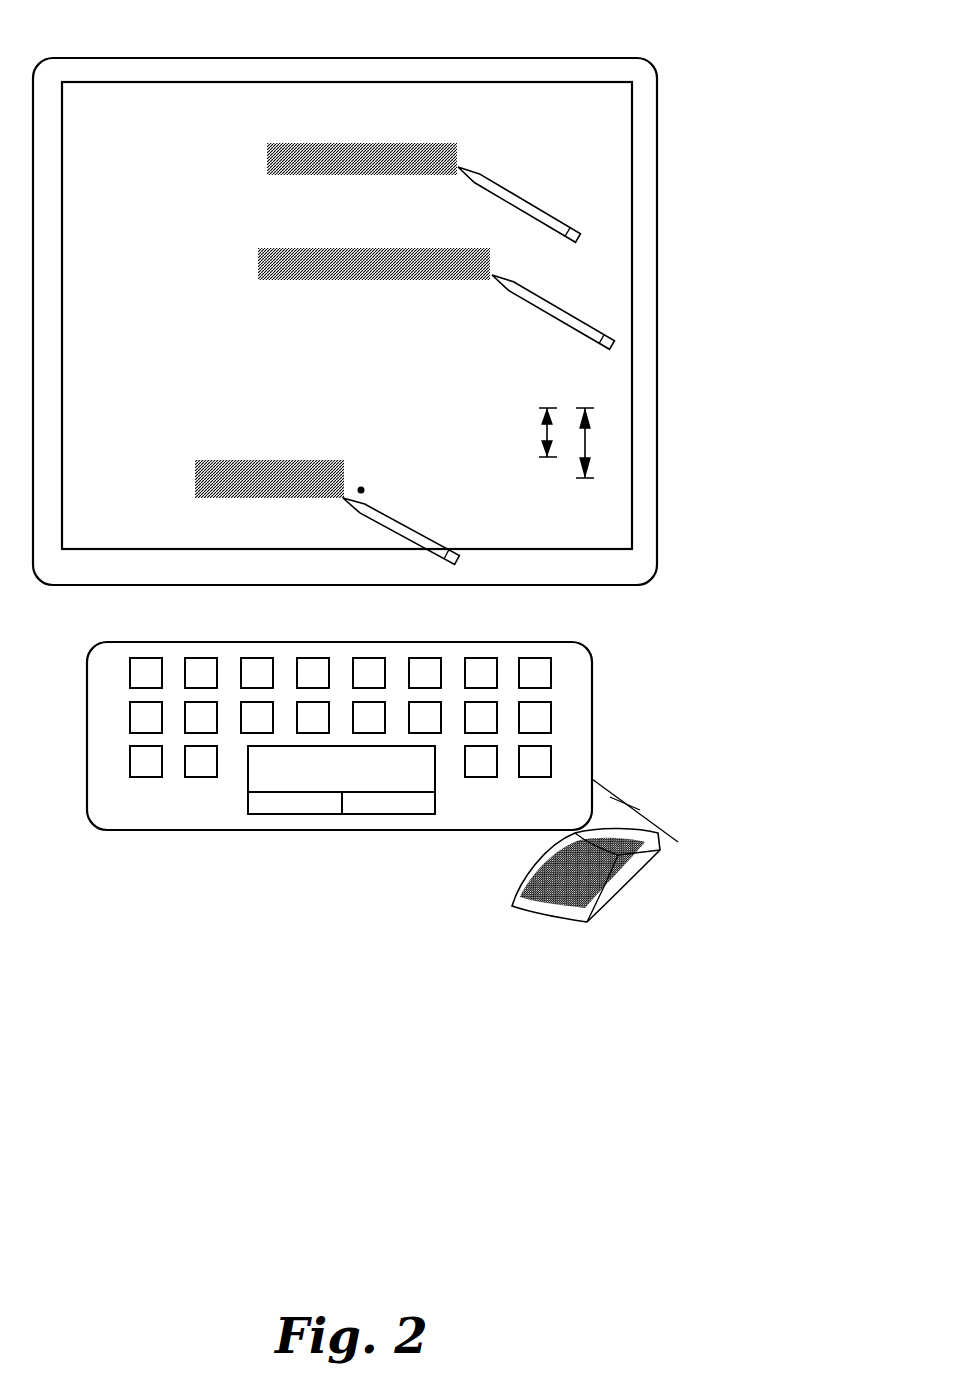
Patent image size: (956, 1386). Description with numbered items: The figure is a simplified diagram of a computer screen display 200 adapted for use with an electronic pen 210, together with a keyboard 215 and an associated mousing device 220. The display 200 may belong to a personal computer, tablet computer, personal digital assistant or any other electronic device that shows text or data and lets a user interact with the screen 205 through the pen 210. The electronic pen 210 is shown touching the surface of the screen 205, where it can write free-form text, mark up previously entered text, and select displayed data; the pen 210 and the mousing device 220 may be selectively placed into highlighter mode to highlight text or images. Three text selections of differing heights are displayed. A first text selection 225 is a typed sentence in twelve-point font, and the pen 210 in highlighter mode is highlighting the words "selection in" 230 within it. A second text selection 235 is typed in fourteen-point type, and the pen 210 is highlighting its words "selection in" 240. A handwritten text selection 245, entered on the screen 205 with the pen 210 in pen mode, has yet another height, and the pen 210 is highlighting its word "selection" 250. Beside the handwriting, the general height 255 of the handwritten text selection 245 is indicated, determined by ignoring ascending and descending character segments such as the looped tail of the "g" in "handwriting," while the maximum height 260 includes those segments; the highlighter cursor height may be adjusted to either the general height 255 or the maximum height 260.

The computer screen display 200 is at (505, 52).
The screen 205 is at (598, 119).
The electronic pen 210 is at (522, 190).
The keyboard 215 is at (484, 810).
The mousing device 220 is at (612, 886).
The first text selection 225 is at (188, 190).
The highlighted words "selection in" 230 is at (398, 141).
The second text selection 235 is at (177, 300).
The highlighted words "selection in" 240 is at (400, 246).
The handwritten text selection 245 is at (332, 414).
The highlighted word "selection" 250 is at (182, 490).
The general height of the handwritten text selection 255 is at (545, 403).
The maximum height of the handwritten text selection 260 is at (597, 443).